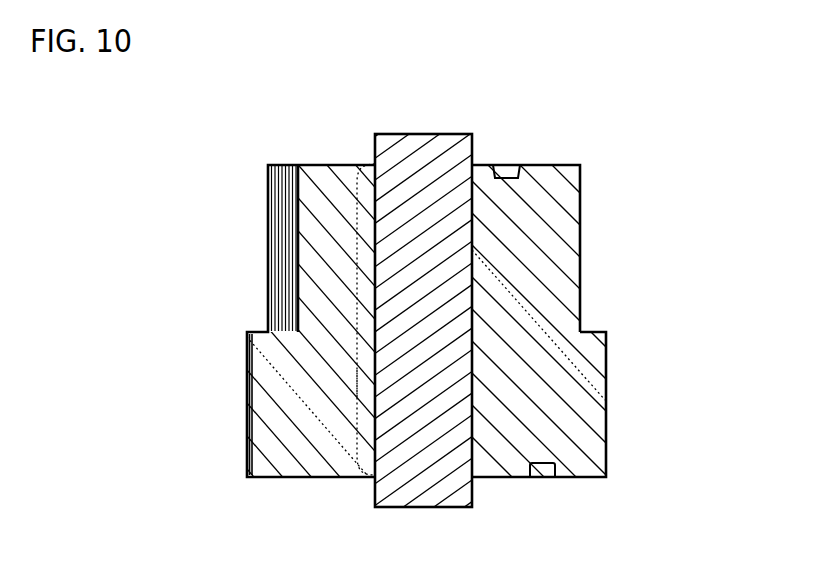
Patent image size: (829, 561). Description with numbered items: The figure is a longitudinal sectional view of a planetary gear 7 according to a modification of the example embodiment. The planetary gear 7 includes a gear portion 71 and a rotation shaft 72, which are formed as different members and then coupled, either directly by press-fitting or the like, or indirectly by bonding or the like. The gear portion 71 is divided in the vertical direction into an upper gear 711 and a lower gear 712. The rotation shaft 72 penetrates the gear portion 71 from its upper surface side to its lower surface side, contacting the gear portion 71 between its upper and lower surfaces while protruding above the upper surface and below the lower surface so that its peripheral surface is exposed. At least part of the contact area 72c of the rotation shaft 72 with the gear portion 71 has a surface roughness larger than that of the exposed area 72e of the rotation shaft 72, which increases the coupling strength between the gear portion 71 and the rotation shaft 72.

The planetary gear 7 is at (189, 163).
The gear portion 71 is at (668, 310).
The upper gear 711 is at (594, 272).
The lower gear 712 is at (618, 389).
The rotation shaft 72 is at (423, 133).
The contact area 72c is at (355, 377).
The exposed area 72e is at (374, 139).